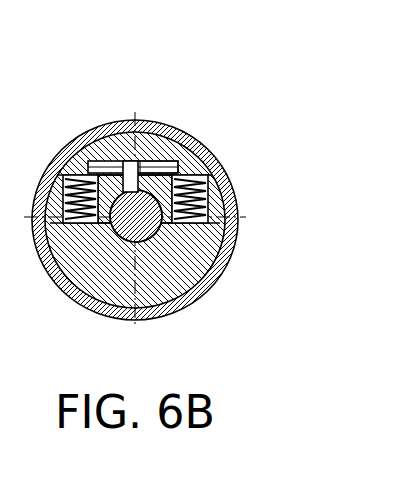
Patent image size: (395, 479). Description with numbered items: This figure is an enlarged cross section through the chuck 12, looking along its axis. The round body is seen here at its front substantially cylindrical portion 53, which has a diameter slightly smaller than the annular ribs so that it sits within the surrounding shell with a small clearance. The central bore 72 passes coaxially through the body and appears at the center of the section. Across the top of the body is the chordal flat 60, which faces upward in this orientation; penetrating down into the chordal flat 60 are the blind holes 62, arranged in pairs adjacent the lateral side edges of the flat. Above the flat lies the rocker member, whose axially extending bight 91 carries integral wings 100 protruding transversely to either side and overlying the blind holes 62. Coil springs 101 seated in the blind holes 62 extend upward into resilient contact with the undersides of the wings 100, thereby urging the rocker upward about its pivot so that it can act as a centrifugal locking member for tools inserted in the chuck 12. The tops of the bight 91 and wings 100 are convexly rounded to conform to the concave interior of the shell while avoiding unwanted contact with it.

The chuck 12 is at (76, 80).
The front substantially cylindrical portion 53 is at (78, 266).
The chordal flat 60 is at (172, 140).
The blind holes 62 is at (186, 222).
The central bore 72 is at (128, 196).
The bight 91 is at (156, 168).
The wings 100 is at (178, 163).
The coil springs 101 is at (200, 183).